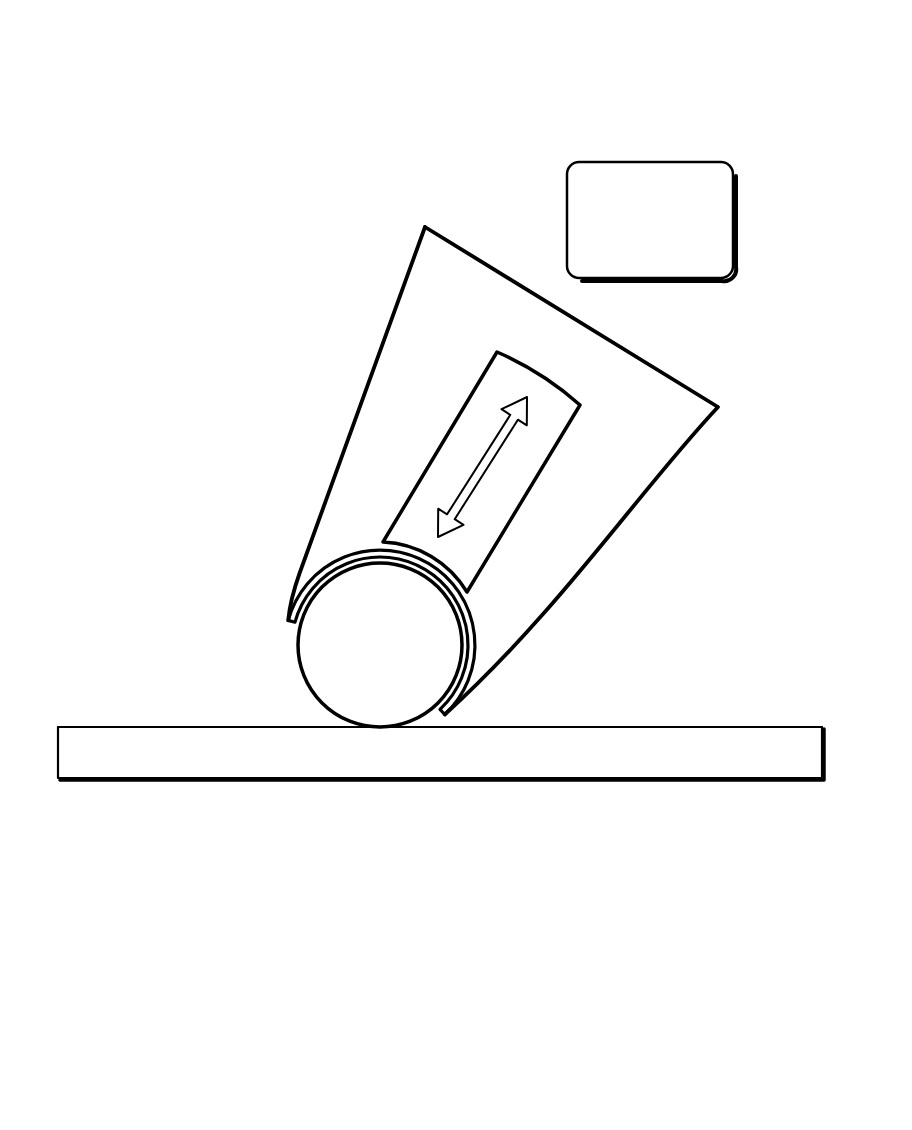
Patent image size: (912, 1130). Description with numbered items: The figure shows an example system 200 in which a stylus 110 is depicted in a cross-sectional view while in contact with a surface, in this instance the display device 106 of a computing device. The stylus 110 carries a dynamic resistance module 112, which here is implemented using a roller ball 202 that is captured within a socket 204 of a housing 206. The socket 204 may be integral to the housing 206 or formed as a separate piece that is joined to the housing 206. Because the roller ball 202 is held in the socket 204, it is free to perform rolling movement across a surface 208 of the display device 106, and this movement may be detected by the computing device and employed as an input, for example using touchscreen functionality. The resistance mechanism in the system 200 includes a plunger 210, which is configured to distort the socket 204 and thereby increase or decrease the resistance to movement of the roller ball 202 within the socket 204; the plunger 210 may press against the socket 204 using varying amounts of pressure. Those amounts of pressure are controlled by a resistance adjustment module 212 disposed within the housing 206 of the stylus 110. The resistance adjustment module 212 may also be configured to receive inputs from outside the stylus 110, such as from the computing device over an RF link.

The system 200 is at (136, 81).
The stylus 110 is at (568, 471).
The dynamic resistance module 112 is at (385, 366).
The housing 206 is at (320, 483).
The socket 204 is at (290, 625).
The roller ball 202 is at (380, 645).
The plunger 210 is at (580, 405).
The resistance adjustment module 212 is at (545, 363).
The surface 208 is at (157, 727).
The display device 106 is at (441, 753).